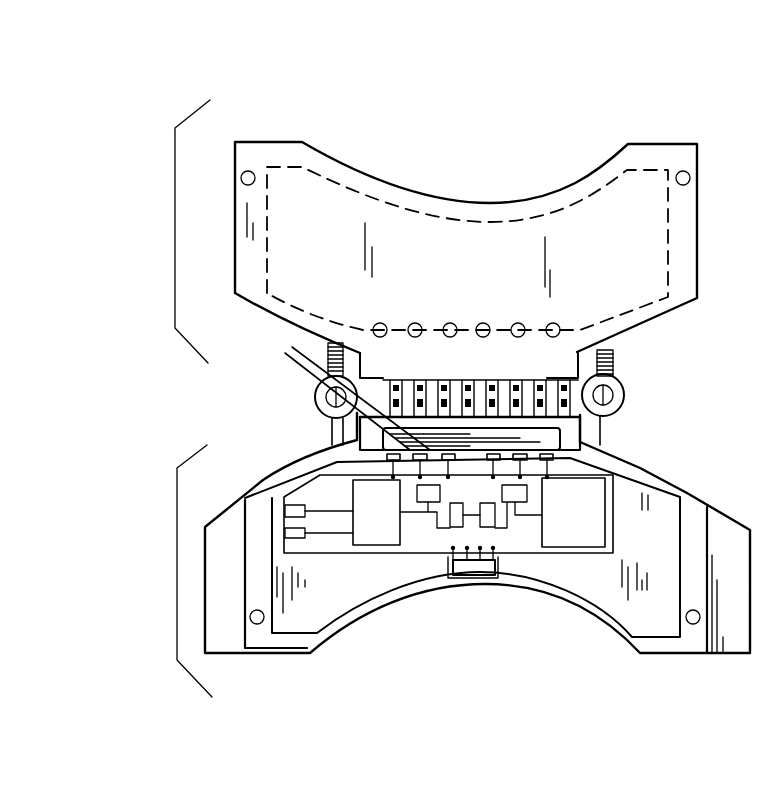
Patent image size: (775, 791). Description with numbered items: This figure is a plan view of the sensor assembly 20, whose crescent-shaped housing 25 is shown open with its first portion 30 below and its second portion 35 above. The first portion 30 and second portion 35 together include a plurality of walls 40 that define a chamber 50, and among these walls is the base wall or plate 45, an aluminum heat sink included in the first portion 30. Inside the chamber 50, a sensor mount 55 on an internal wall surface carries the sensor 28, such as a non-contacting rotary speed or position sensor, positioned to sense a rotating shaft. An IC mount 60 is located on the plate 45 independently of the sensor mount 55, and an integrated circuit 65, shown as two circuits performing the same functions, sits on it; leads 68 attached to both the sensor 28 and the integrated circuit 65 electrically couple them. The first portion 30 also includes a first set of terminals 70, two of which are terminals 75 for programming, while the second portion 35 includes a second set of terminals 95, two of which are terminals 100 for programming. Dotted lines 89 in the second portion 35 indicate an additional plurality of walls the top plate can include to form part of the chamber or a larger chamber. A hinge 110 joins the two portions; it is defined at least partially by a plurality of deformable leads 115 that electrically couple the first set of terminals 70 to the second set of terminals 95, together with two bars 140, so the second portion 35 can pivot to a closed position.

The sensor assembly 20 is at (126, 86).
The housing 25 is at (745, 525).
The sensor 28 is at (475, 570).
The first portion 30 is at (175, 570).
The second portion 35 is at (175, 229).
The plurality of walls 40 is at (292, 463).
The base wall or plate 45 is at (240, 584).
The chamber 50 is at (333, 588).
The sensor mount 55 is at (497, 573).
The IC mount 60 is at (588, 557).
The integrated circuit 65 is at (612, 478).
The leads 68 is at (455, 557).
The first set of terminals 70 is at (344, 390).
The terminals 75 is at (360, 440).
The dotted lines 89 is at (320, 178).
The second set of terminals 95 is at (551, 322).
The terminals 100 is at (378, 323).
The hinge 110 is at (258, 398).
The plurality of leads 115 is at (448, 382).
The bars 140 is at (612, 368).